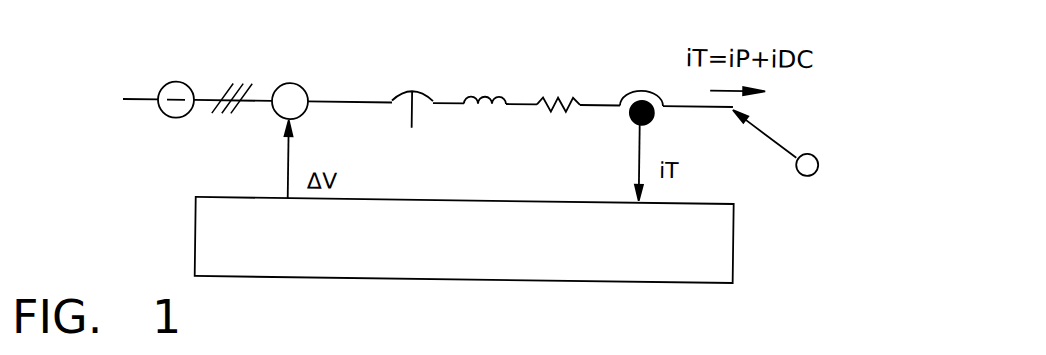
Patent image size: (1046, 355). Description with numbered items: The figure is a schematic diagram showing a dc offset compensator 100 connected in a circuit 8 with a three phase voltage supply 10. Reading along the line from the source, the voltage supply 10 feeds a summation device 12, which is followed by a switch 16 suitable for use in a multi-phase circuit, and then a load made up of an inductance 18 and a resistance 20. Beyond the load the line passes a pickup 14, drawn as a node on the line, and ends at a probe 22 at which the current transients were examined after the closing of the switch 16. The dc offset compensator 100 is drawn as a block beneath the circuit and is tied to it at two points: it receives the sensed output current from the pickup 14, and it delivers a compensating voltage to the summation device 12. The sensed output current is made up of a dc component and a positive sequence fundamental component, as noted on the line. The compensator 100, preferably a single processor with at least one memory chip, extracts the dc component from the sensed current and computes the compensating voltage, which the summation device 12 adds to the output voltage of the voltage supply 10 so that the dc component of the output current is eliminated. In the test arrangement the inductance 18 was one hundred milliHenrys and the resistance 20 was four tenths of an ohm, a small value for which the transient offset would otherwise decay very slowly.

The circuit 8 is at (390, 70).
The three phase voltage supply 10 is at (188, 80).
The summation device 12 is at (303, 110).
The pickup 14 is at (667, 113).
The switch 16 is at (432, 88).
The inductance 18 is at (505, 93).
The resistance 20 is at (580, 96).
The probe 22 is at (777, 129).
The dc offset compensator 100 is at (735, 242).